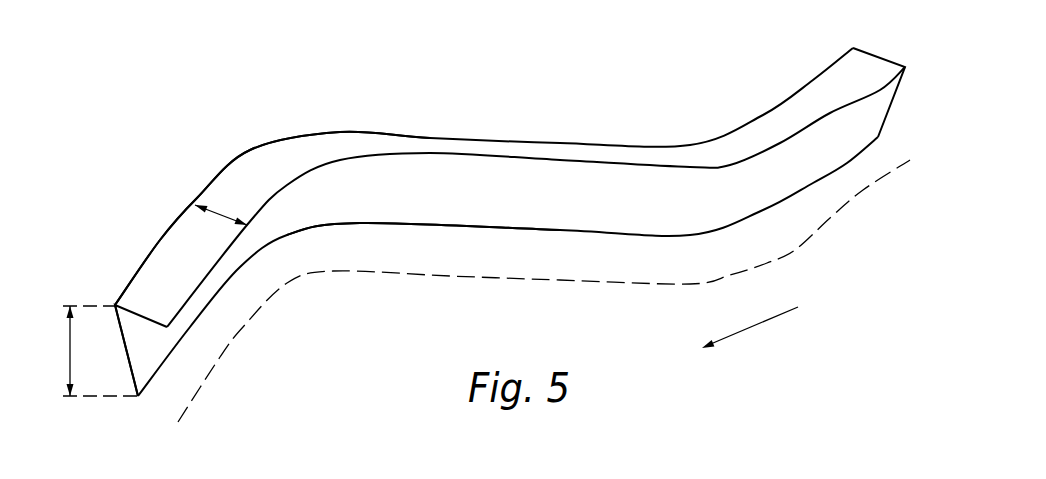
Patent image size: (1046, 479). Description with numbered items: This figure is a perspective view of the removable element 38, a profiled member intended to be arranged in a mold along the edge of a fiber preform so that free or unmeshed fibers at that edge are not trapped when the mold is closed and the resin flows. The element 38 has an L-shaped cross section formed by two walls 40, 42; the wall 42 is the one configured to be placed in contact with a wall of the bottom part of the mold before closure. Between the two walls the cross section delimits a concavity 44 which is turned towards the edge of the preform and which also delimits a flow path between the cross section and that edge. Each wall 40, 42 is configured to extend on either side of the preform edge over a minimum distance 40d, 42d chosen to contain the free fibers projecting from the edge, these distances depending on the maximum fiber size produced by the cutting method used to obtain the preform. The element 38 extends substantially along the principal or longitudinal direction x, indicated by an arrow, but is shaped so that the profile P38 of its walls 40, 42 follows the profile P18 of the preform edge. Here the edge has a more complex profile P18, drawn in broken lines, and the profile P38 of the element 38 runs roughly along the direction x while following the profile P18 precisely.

The removable element 38 is at (531, 149).
The wall 40 is at (270, 167).
The concavity 44 is at (363, 177).
The wall 42 is at (127, 353).
The minimum distance 40d is at (223, 210).
The minimum distance 42d is at (75, 351).
The profile of the walls of the removable element P38 is at (160, 243).
The profile of the edge of the preform P18 is at (219, 357).
The principal direction x is at (750, 332).